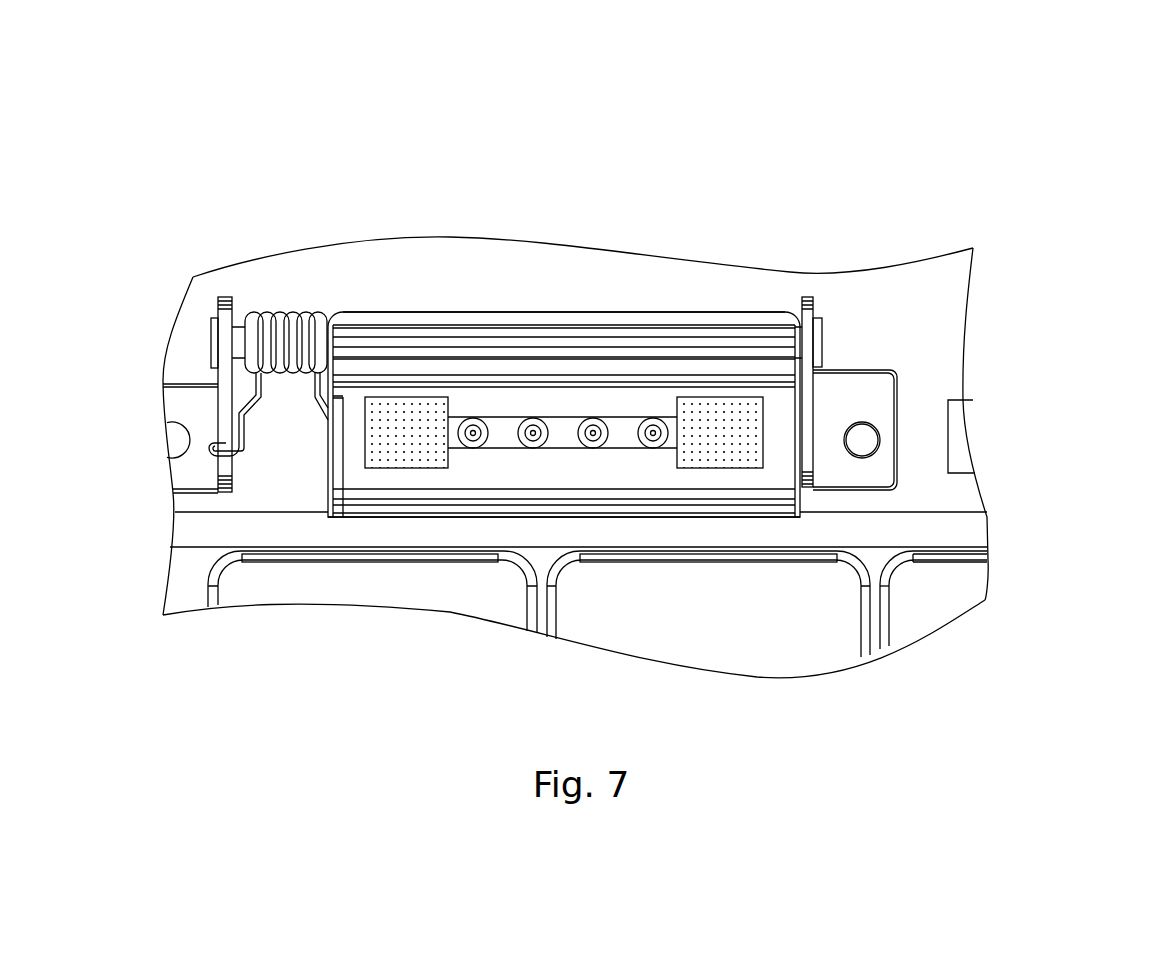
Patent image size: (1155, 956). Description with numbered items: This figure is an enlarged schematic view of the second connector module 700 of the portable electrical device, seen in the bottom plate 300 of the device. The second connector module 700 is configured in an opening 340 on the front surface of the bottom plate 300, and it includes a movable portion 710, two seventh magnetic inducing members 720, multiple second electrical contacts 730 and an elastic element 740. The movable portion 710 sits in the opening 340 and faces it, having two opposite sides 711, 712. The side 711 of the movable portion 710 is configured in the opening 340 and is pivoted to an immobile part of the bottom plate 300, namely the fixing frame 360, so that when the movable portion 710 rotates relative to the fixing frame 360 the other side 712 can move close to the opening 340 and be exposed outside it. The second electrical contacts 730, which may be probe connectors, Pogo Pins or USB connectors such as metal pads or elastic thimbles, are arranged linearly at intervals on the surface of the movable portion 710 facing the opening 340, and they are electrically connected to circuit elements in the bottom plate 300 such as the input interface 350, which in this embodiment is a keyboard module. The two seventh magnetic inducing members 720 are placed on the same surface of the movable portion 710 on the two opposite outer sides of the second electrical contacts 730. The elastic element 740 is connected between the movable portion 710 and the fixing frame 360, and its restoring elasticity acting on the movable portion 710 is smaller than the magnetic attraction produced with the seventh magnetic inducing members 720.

The bottom plate 300 is at (1006, 336).
The opening 340 is at (855, 350).
The input interface 350 is at (968, 533).
The fixing frame 360 is at (180, 403).
The second connector module 700 is at (692, 133).
The movable portion 710 is at (564, 439).
The side of the movable portion 711 is at (750, 312).
The other side of the movable portion 712 is at (665, 517).
The seventh magnetic inducing member 720 is at (422, 397).
The second electrical contacts 730 is at (593, 433).
The elastic element 740 is at (297, 318).